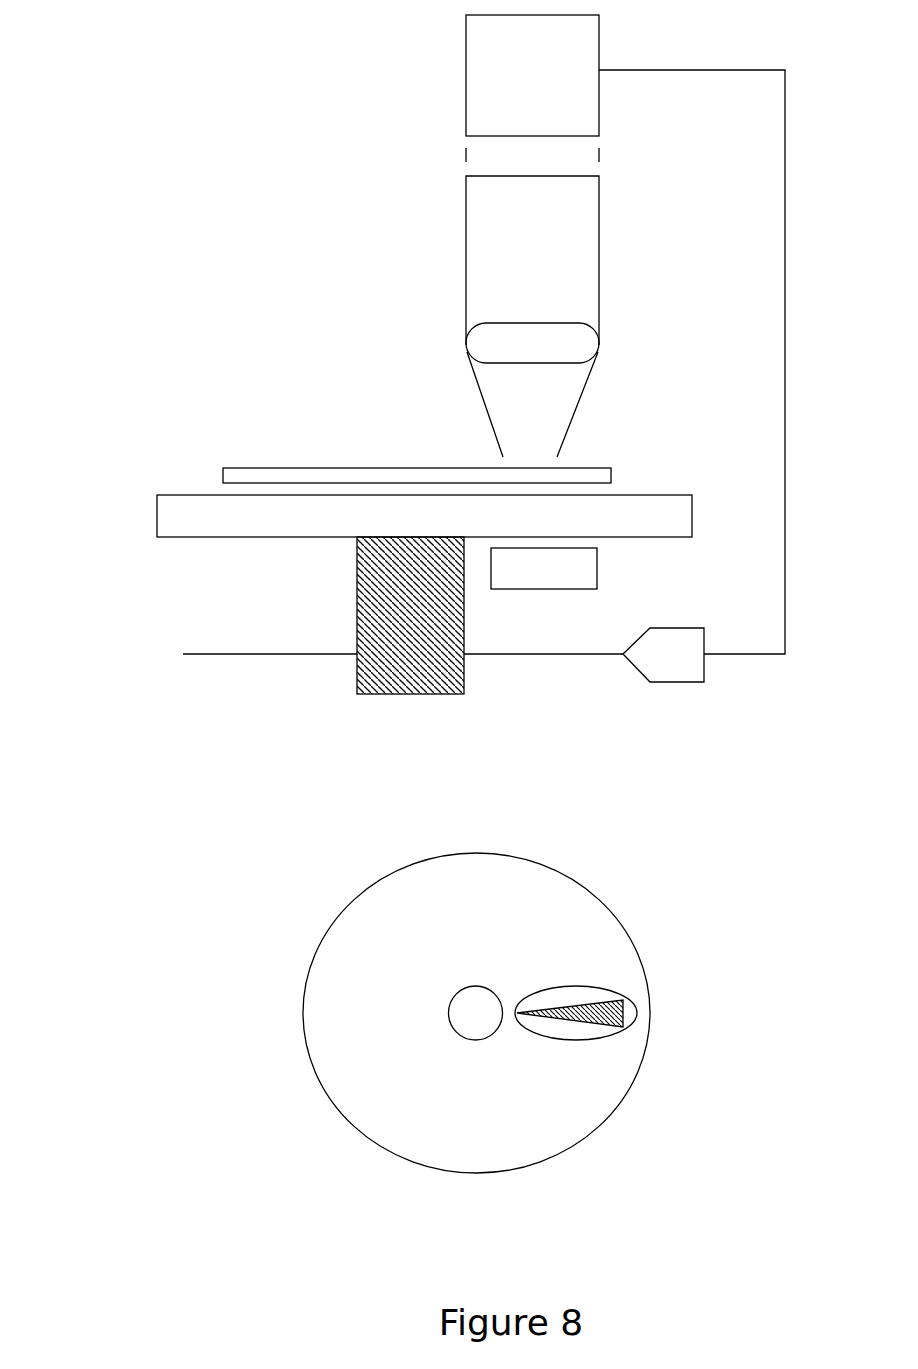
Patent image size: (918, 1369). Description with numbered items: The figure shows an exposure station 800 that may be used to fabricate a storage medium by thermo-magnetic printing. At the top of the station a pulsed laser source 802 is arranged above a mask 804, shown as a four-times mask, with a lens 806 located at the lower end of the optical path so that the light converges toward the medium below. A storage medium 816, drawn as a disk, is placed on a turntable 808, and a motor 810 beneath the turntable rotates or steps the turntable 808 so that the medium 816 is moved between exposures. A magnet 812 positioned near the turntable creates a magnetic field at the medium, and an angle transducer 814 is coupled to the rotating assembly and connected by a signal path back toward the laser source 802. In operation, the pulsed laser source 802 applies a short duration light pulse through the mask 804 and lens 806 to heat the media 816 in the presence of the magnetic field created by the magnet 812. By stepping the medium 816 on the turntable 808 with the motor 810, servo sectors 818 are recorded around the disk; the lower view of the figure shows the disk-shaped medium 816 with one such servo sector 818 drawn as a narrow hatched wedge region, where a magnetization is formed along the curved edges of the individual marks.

The exposure station 800 is at (239, 164).
The pulsed laser source 802 is at (532, 75).
The mask 804 is at (532, 260).
The lens 806 is at (514, 348).
The turntable 808 is at (179, 522).
The motor 810 is at (410, 686).
The magnet 812 is at (543, 579).
The angle transducer 814 is at (686, 670).
The storage medium 816 is at (240, 438).
The servo sectors 818 is at (618, 1071).